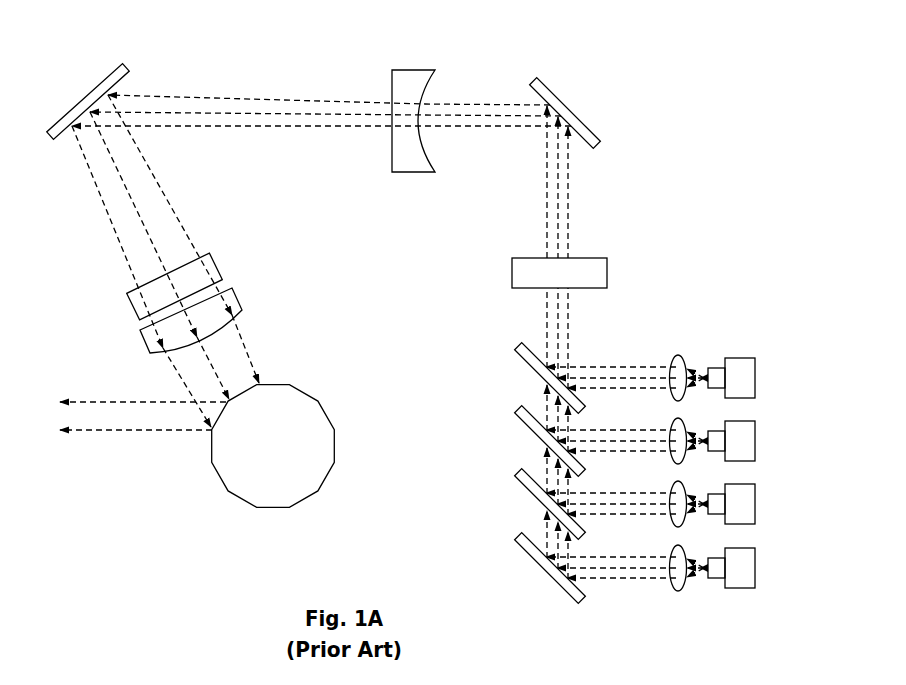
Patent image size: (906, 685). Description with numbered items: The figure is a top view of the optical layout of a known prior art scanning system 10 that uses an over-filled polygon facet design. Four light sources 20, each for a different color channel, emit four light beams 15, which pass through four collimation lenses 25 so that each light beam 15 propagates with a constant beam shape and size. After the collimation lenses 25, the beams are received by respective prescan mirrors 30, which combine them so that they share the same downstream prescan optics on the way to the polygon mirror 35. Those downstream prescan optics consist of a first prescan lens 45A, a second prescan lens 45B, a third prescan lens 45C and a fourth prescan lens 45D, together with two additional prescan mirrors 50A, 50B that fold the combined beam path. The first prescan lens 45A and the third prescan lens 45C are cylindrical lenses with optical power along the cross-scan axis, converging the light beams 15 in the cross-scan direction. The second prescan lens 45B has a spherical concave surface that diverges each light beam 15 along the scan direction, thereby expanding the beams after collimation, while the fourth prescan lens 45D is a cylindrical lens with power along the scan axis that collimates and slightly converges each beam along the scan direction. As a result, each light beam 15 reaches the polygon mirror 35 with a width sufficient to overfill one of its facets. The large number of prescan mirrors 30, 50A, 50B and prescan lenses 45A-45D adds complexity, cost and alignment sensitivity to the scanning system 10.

The scanning system 10 is at (556, 37).
The light beams 15 is at (618, 366).
The light sources 20 is at (743, 358).
The collimation lenses 25 is at (677, 352).
The prescan mirrors 30 is at (516, 353).
The polygon mirror 35 is at (281, 455).
The first prescan lens 45A is at (600, 258).
The second prescan lens 45B is at (410, 70).
The third prescan lens 45C is at (217, 262).
The fourth prescan lens 45D is at (235, 295).
The prescan mirror 50A is at (578, 119).
The prescan mirror 50B is at (109, 67).